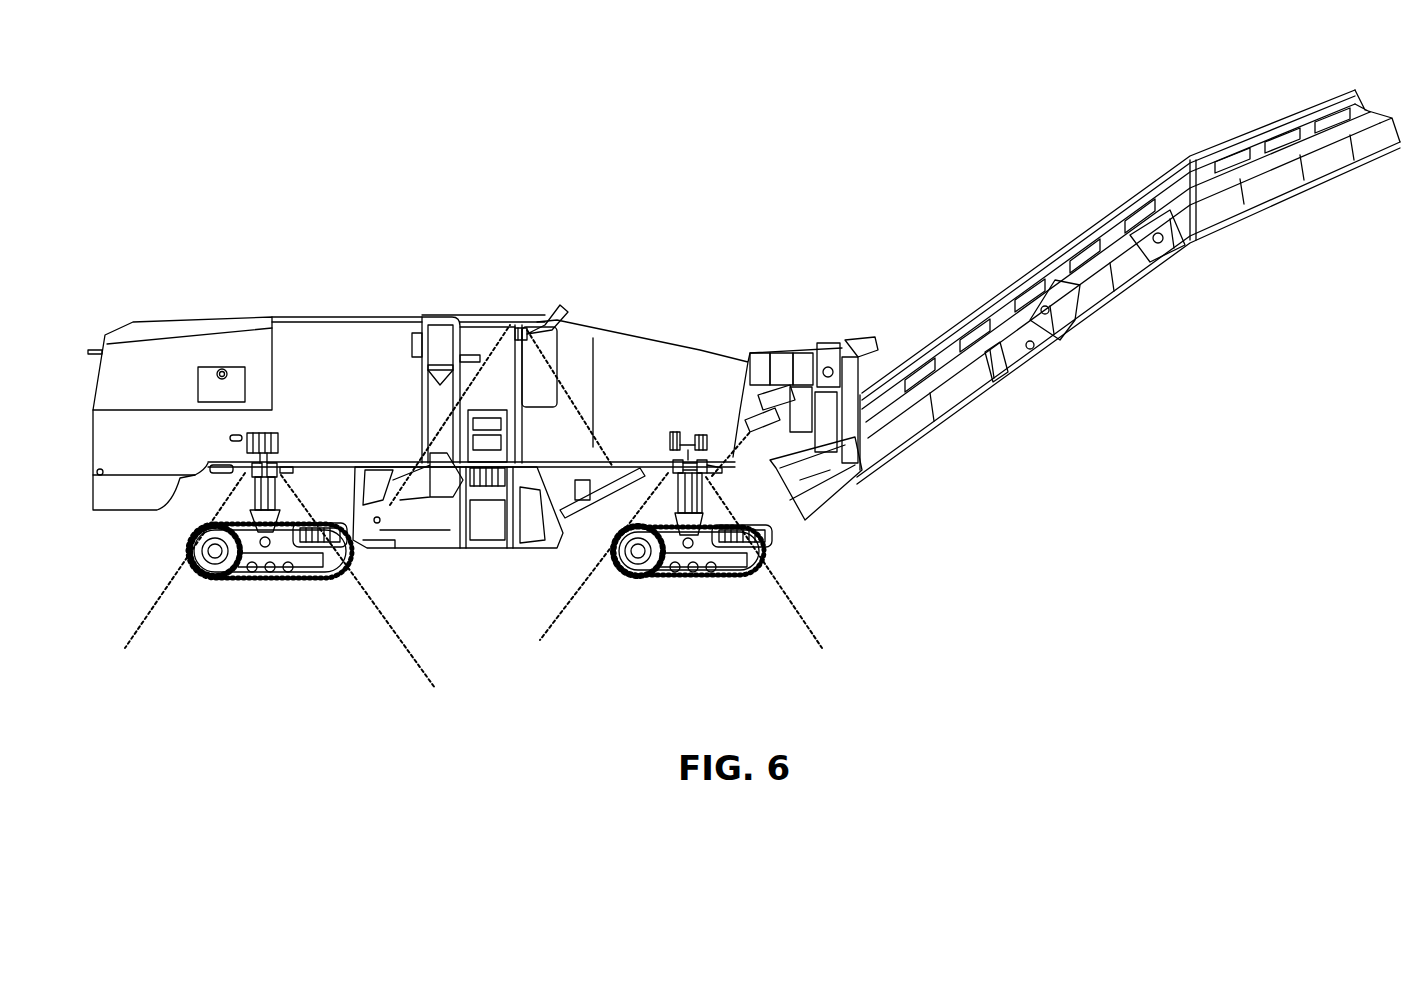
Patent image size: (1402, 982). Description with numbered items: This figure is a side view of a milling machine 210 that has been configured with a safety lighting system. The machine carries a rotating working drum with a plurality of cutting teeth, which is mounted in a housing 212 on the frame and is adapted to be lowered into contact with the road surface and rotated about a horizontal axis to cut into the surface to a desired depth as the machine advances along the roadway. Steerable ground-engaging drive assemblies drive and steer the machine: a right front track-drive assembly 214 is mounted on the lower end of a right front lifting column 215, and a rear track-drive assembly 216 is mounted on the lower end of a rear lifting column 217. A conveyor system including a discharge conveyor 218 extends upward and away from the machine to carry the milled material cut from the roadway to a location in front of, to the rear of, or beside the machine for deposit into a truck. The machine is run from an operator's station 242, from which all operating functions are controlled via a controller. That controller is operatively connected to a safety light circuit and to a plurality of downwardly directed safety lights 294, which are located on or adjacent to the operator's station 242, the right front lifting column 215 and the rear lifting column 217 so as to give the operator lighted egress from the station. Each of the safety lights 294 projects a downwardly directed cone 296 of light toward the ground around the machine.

The milling machine 210 is at (810, 190).
The housing 212 is at (496, 550).
The right front track-drive assembly 214 is at (731, 587).
The right front lifting column 215 is at (704, 498).
The rear track-drive assembly 216 is at (251, 572).
The rear lifting column 217 is at (250, 492).
The discharge conveyor 218 is at (1094, 222).
The operator's station 242 is at (487, 314).
The safety lights 294 is at (285, 456).
The cone of light 296 is at (146, 598).